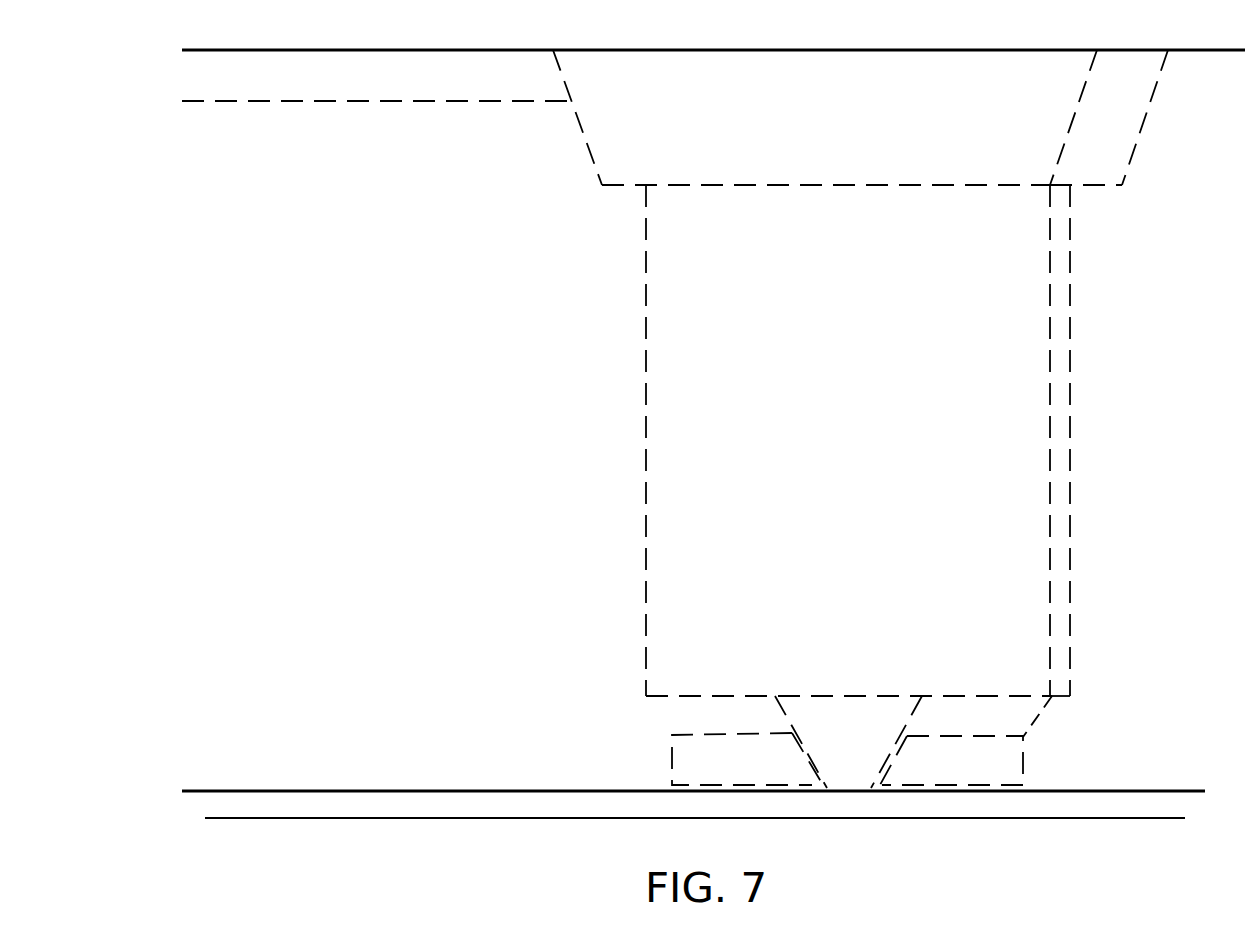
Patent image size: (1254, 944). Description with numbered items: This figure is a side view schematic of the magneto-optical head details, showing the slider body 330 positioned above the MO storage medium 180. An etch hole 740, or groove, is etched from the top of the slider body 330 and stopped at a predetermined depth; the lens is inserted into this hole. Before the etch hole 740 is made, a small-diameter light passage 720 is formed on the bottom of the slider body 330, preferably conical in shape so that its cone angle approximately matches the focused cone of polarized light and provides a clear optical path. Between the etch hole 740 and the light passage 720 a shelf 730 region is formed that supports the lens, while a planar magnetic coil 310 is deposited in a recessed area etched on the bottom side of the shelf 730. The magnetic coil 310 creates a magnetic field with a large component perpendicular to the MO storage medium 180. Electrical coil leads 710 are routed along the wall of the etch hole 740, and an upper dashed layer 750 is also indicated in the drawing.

The upper interconnect layer 750 is at (462, 101).
The etch hole 740 is at (723, 436).
The electrical coil leads 710 is at (1049, 381).
The light passage 720 is at (858, 718).
The shelf 730 is at (688, 726).
The magnetic coil 310 is at (1005, 762).
The slider body 330 is at (430, 791).
The MO storage medium 180 is at (1077, 818).